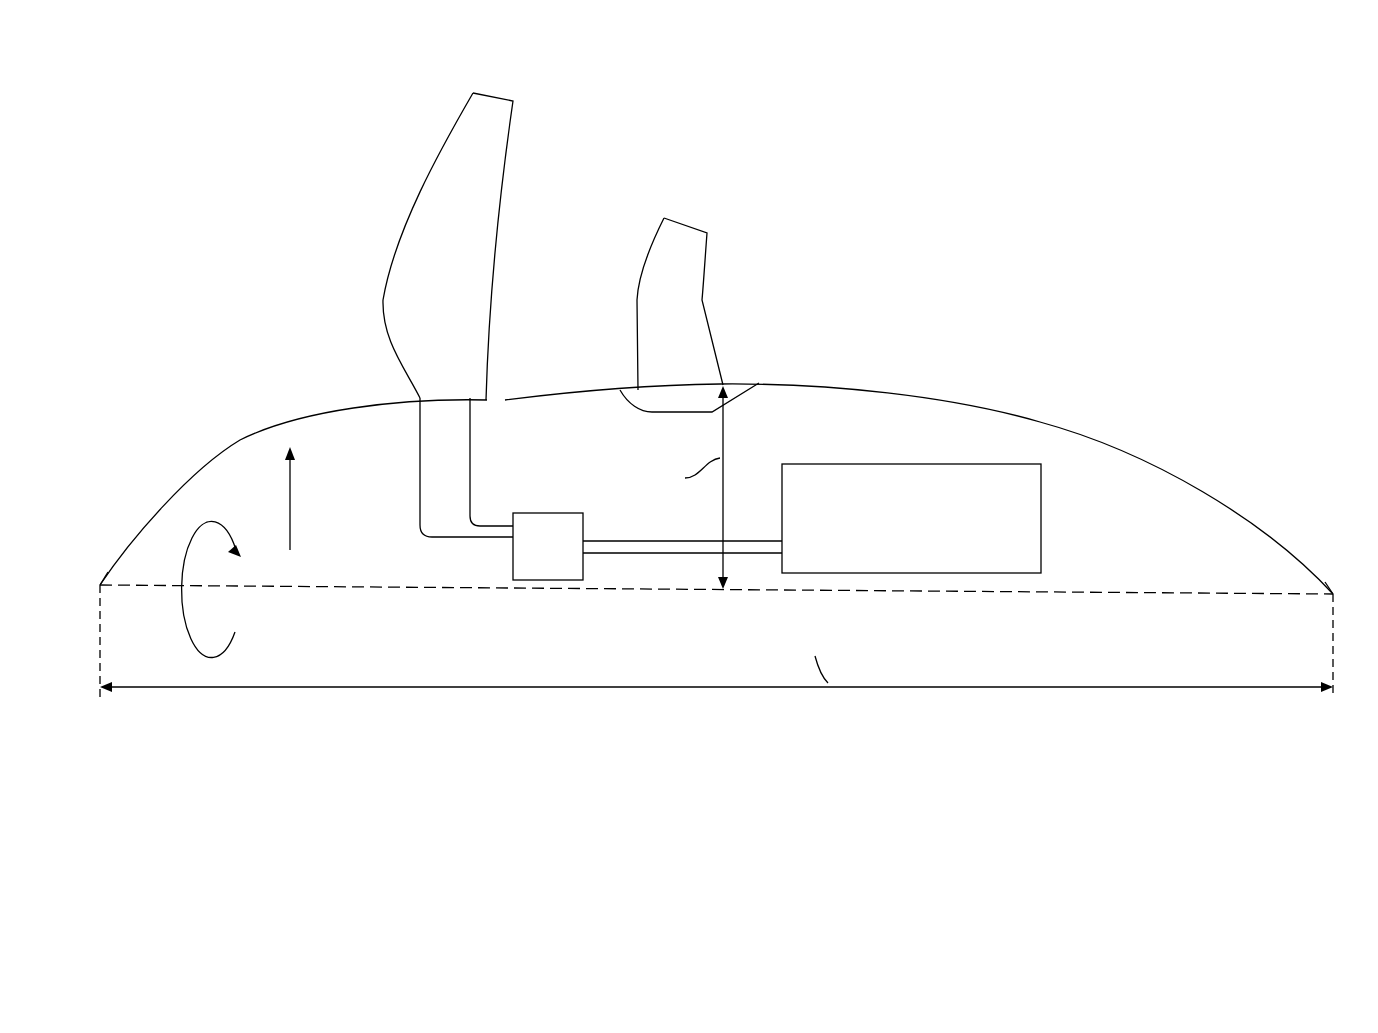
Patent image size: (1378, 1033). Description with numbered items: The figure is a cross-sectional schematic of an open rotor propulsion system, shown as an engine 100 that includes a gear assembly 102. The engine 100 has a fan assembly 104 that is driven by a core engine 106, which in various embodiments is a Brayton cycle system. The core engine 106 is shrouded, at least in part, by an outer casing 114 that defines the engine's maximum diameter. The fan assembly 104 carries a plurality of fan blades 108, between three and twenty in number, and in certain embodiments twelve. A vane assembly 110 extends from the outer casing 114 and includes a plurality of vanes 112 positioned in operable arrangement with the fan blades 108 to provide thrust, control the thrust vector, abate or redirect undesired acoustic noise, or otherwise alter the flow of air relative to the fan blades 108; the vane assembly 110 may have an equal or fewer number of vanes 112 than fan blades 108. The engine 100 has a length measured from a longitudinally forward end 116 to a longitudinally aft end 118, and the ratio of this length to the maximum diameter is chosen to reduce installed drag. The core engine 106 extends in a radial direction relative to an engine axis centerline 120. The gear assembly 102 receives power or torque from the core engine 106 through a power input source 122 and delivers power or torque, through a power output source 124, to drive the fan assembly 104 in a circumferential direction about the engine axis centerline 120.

The engine 100 is at (1007, 168).
The gear assembly 102 is at (548, 580).
The fan assembly 104 is at (370, 106).
The core engine 106 is at (1042, 520).
The fan blades 108 is at (465, 177).
The vane assembly 110 is at (678, 315).
The vanes 112 is at (668, 303).
The outer casing 114 is at (925, 398).
The longitudinally forward end 116 is at (100, 578).
The longitudinally aft end 118 is at (1334, 587).
The engine axis centerline 120 is at (388, 589).
The power input source 122 is at (680, 555).
The power output source 124 is at (458, 538).